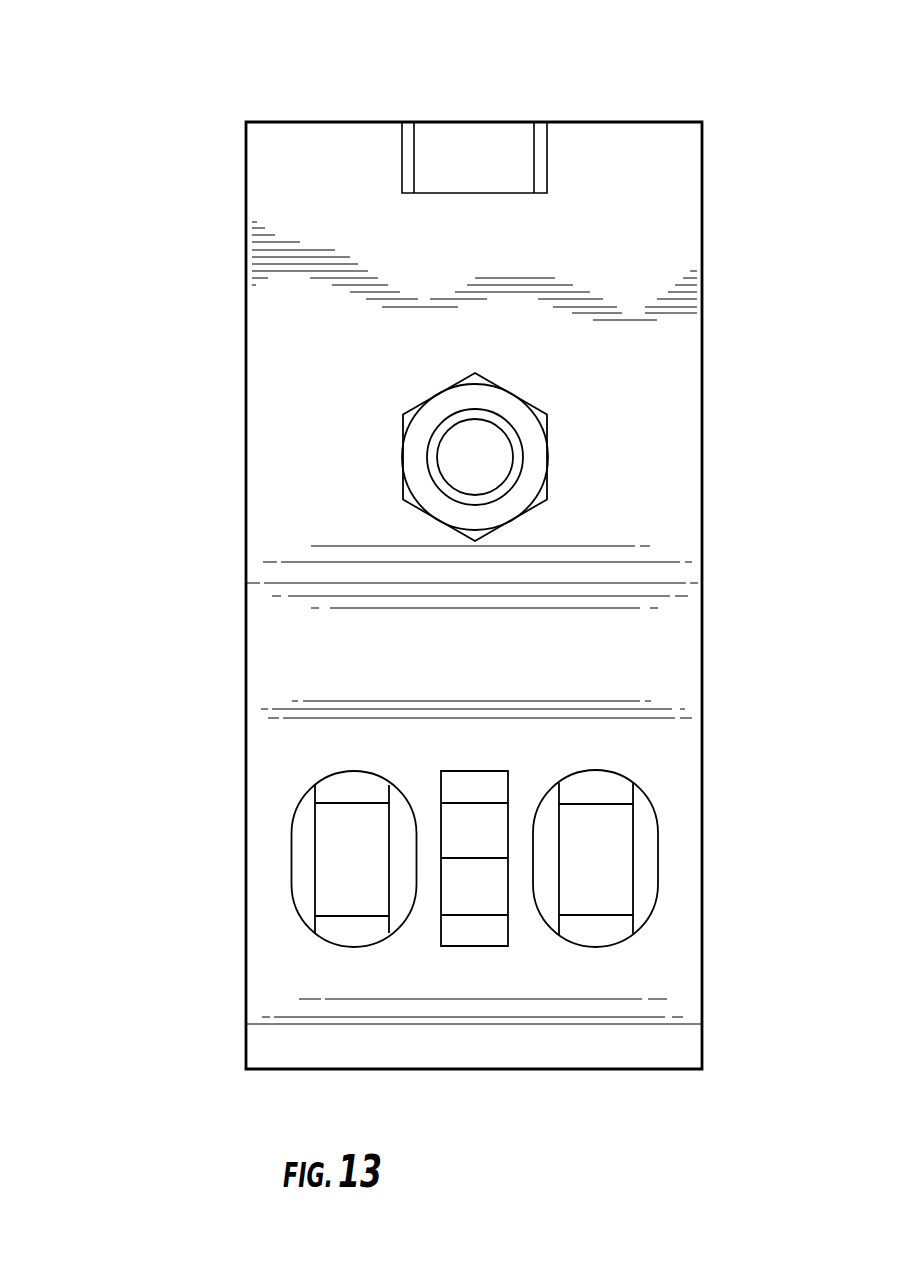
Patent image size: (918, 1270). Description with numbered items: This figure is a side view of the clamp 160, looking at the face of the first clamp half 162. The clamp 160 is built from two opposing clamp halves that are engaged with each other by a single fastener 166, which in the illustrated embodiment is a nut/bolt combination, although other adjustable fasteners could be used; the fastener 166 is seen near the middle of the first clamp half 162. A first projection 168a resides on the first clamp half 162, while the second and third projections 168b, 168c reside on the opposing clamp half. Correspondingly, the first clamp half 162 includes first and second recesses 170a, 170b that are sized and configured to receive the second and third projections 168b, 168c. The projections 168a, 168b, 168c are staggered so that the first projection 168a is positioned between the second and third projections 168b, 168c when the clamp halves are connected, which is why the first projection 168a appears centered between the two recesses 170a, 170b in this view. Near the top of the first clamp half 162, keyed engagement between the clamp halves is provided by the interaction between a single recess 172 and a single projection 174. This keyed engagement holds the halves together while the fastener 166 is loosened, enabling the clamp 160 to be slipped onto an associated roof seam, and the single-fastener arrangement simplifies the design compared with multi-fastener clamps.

The clamp 160 is at (177, 148).
The first clamp half 162 is at (672, 358).
The fastener 166 is at (473, 458).
The first projection 168a is at (479, 857).
The second projection 168b is at (355, 877).
The third projection 168c is at (608, 853).
The first recess 170a is at (290, 855).
The second recess 170b is at (657, 878).
The recess 172 is at (540, 158).
The projection 174 is at (458, 160).